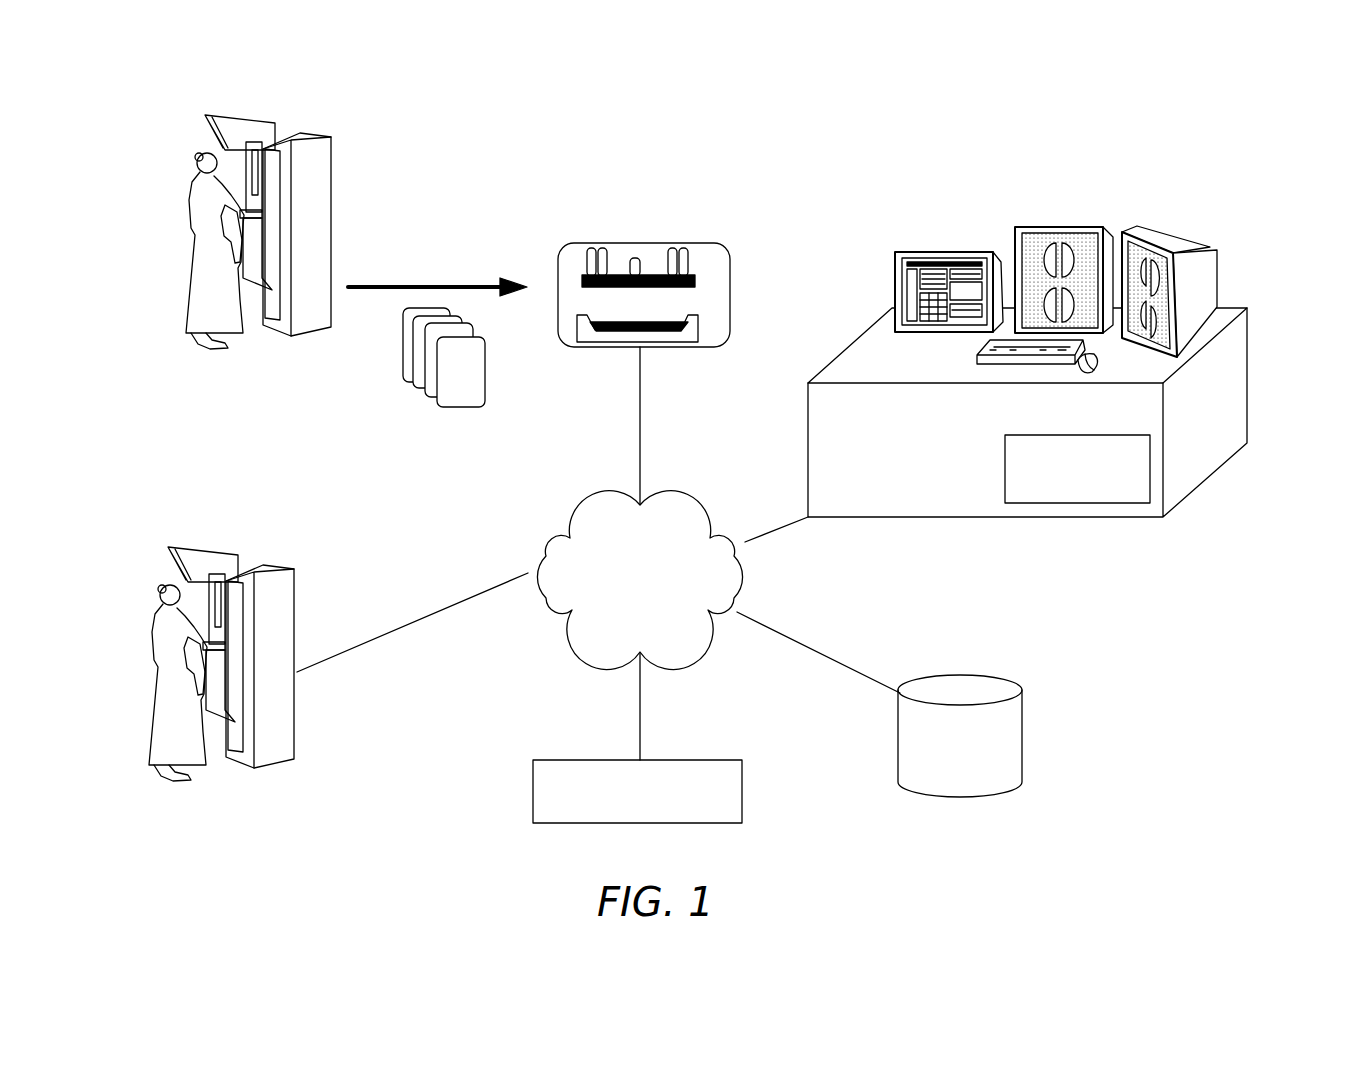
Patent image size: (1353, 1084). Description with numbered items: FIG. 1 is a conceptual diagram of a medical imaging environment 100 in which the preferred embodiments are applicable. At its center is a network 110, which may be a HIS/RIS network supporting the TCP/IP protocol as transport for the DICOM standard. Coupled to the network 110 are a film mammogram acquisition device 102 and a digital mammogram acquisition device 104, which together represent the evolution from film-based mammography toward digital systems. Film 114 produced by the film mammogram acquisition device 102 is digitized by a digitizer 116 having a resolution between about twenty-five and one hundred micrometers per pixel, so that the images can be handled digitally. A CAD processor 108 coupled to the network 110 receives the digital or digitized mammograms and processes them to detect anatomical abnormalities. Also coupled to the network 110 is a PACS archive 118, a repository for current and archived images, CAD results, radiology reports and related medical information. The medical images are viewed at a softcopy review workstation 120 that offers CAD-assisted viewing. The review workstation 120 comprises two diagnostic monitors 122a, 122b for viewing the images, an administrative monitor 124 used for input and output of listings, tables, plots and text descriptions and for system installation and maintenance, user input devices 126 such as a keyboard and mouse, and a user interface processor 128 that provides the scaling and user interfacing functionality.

The computer-aided detection system 100 is at (497, 128).
The film mammogram acquisition device 102 is at (319, 205).
The digital mammogram acquisition device 104 is at (294, 583).
The CAD processor 108 is at (533, 796).
The network 110 is at (572, 507).
The film 114 is at (478, 391).
The digitizer 116 is at (642, 243).
The PACS archive 118 is at (898, 738).
The softcopy review workstation 120 is at (1235, 168).
The diagnostic monitor 122a is at (1058, 227).
The diagnostic monitor 122b is at (1126, 232).
The administrative monitor 124 is at (943, 252).
The user input devices 126 is at (976, 356).
The user interface processor 128 is at (1004, 467).